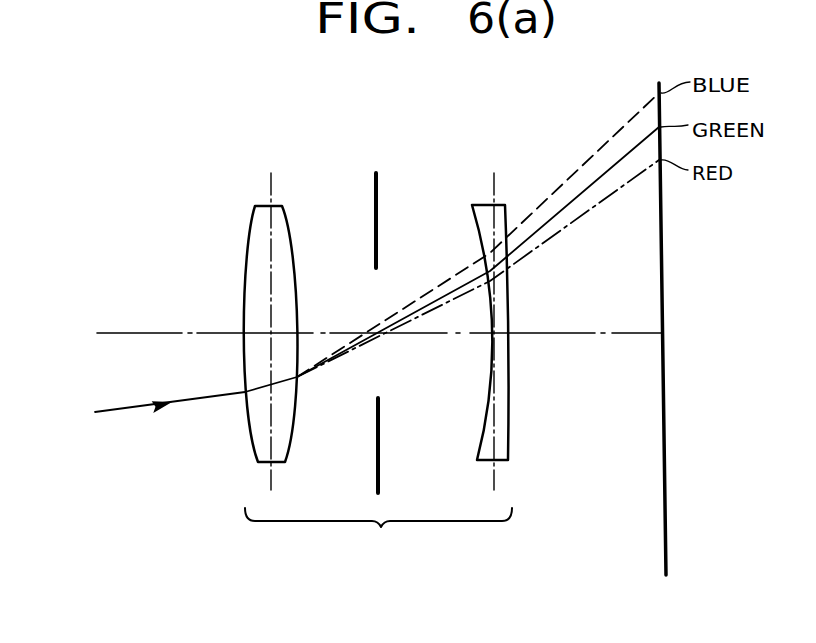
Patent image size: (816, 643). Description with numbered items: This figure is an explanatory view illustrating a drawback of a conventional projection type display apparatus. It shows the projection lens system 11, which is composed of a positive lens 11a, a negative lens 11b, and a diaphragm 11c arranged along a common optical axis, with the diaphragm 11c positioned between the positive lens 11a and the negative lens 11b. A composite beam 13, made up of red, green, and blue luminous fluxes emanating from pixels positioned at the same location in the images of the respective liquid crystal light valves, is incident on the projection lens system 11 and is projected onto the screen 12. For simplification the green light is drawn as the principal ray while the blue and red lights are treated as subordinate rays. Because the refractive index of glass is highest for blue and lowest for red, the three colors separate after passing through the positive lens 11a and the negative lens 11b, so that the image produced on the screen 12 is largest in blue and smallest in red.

The projection lens system 11 is at (378, 358).
The positive lens 11a is at (275, 205).
The negative lens 11b is at (480, 206).
The diaphragm 11c is at (376, 176).
The screen 12 is at (666, 520).
The composite beam 13 is at (117, 411).